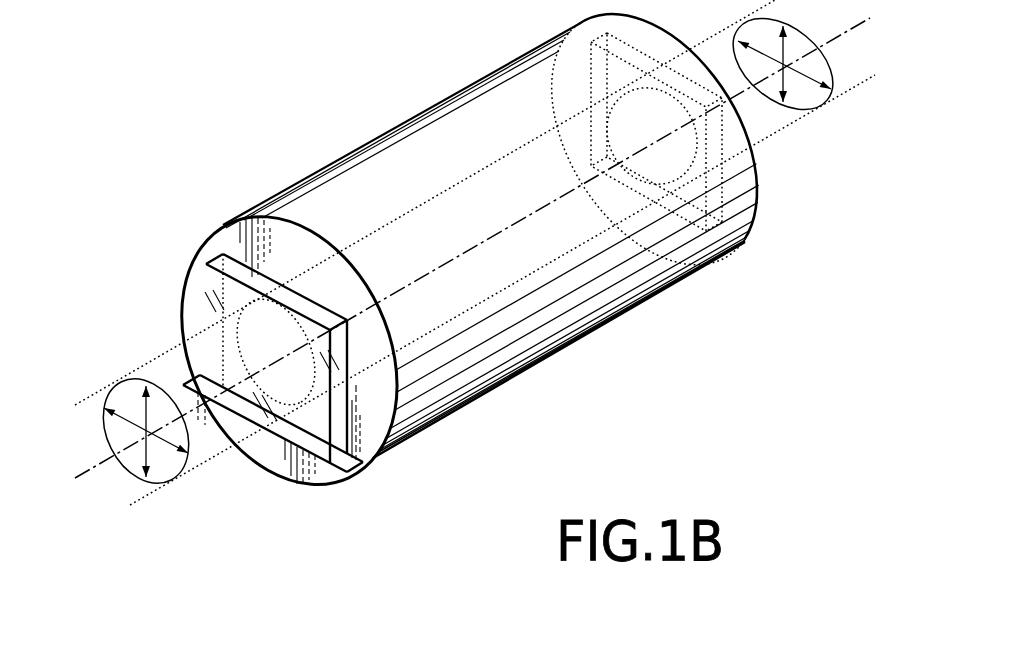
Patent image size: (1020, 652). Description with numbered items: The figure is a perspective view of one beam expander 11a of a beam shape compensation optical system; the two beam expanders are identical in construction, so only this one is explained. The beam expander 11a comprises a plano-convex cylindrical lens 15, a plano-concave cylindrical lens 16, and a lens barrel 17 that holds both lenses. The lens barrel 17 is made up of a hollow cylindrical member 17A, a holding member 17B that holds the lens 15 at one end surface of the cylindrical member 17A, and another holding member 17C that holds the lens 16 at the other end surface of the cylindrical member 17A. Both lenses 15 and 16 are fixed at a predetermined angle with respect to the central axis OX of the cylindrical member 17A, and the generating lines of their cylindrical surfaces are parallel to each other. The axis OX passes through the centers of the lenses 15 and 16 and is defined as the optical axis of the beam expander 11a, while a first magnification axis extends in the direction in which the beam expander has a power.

The beam expander 11a is at (324, 136).
The central axis OX is at (513, 217).
The plano-convex cylindrical lens 15 is at (230, 345).
The plano-concave cylindrical lens 16 is at (757, 152).
The lens barrel 17 is at (638, 341).
The hollow cylindrical member 17A is at (530, 331).
The holding member 17B is at (357, 463).
The holding member 17C is at (747, 241).